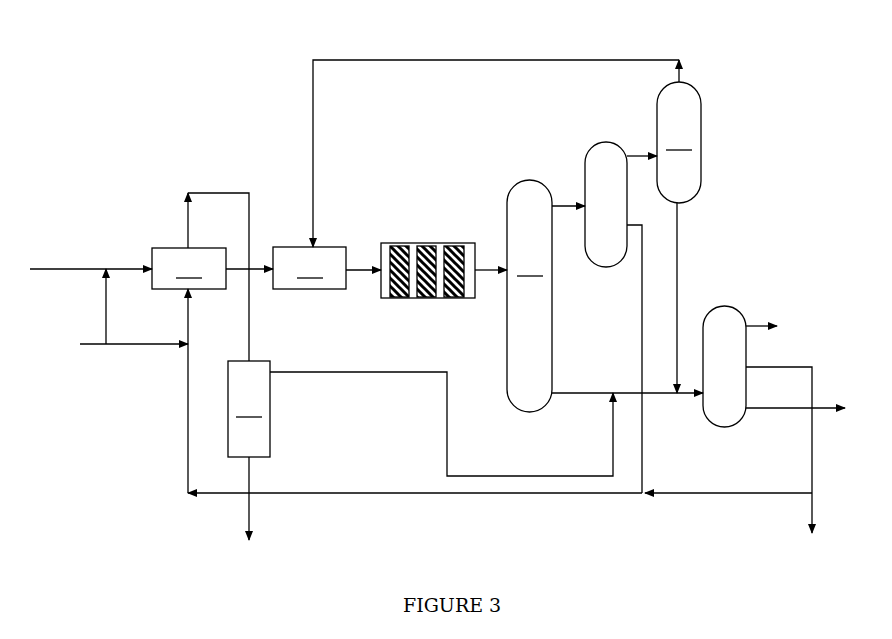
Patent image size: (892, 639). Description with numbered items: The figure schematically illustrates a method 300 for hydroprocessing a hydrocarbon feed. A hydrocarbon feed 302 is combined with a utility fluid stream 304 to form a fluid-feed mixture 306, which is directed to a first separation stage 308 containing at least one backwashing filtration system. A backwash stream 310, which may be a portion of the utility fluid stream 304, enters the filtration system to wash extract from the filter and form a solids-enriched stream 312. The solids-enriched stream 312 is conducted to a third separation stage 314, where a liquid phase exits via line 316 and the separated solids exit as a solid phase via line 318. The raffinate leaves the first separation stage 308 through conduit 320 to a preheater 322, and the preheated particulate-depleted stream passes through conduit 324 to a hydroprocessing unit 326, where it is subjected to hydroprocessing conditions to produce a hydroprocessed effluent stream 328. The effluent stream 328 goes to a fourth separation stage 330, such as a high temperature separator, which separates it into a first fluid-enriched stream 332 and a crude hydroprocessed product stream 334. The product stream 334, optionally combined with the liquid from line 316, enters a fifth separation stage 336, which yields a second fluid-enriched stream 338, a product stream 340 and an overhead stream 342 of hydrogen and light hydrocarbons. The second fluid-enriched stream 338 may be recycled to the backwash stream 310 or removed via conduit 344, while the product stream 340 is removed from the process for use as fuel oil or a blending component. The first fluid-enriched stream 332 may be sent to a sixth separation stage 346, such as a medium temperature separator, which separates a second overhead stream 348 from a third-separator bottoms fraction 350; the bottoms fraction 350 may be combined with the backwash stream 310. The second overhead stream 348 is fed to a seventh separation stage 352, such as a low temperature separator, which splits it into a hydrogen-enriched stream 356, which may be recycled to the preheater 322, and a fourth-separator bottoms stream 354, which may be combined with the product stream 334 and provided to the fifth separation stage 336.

The method 300 is at (200, 57).
The hydrocarbon feed 302 is at (55, 268).
The utility fluid stream 304 is at (80, 345).
The fluid-feed mixture 306 is at (148, 271).
The first separation stage 308 is at (212, 268).
The backwash stream 310 is at (188, 460).
The solids-enriched stream 312 is at (188, 228).
The third separation stage 314 is at (249, 409).
The line 316 is at (378, 373).
The line 318 is at (250, 520).
The conduit 320 is at (263, 272).
The preheater 322 is at (327, 268).
The conduit 324 is at (358, 268).
The hydroprocessing unit 326 is at (410, 242).
The hydroprocessed effluent stream 328 is at (493, 272).
The fourth separation stage 330 is at (546, 296).
The first fluid-enriched stream 332 is at (563, 204).
The crude hydroprocessed product stream 334 is at (575, 395).
The fifth separation stage 336 is at (724, 366).
The second fluid-enriched stream 338 is at (785, 365).
The product stream 340 is at (762, 410).
The overhead stream 342 is at (775, 322).
The conduit 344 is at (808, 500).
The sixth separation stage 346 is at (613, 317).
The second overhead stream 348 is at (635, 155).
The third-separator bottoms fraction 350 is at (642, 318).
The seventh separation stage 352 is at (679, 142).
The fourth-separator bottoms stream 354 is at (678, 222).
The hydrogen-enriched stream 356 is at (503, 59).